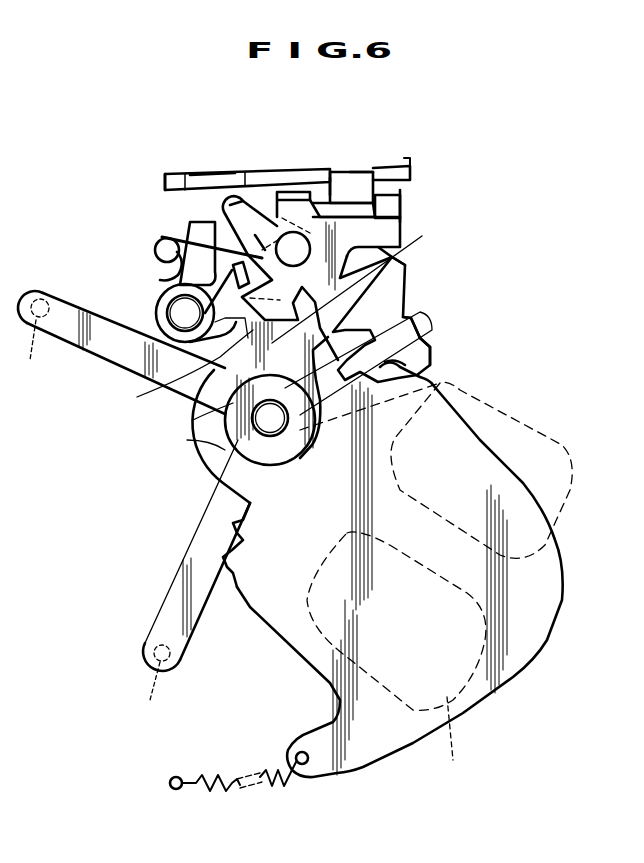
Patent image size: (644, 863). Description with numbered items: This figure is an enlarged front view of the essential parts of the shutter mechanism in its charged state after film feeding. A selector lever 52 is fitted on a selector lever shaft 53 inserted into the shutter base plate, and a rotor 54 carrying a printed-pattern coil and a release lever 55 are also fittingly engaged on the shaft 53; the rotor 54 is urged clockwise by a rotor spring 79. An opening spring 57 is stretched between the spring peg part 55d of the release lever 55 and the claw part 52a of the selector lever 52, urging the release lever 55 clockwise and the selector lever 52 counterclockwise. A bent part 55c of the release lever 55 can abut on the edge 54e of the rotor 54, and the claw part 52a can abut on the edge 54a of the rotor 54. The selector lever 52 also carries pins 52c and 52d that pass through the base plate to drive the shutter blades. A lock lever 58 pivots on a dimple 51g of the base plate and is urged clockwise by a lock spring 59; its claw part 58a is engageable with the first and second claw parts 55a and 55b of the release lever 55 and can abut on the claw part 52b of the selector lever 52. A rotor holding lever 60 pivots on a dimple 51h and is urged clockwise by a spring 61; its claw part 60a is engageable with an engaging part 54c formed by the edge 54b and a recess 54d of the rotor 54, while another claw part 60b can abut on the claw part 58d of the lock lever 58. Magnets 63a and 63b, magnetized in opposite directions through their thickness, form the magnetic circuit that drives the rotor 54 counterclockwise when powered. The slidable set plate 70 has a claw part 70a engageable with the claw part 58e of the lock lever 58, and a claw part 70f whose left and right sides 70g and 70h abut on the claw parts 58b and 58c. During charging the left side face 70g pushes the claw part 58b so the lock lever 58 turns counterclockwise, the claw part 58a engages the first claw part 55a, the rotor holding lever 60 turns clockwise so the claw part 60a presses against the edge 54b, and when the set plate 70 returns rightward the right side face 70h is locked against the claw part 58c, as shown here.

The dimple 51g is at (328, 183).
The dimple 51h is at (183, 313).
The selector lever 52 is at (124, 373).
The claw part 52a is at (230, 550).
The claw part 52b is at (422, 323).
The pin 52c is at (156, 685).
The pin 52d is at (30, 343).
The selector lever shaft 53 is at (265, 427).
The rotor 54 is at (546, 644).
The edge 54a is at (238, 580).
The edge 54b is at (178, 365).
The engaging part 54c is at (193, 420).
The recess 54d is at (187, 440).
The edge 54e is at (404, 366).
The release lever 55 is at (405, 263).
The first claw part 55a is at (412, 322).
The second claw part 55b is at (432, 345).
The bent part 55c is at (433, 360).
The spring peg part 55d is at (406, 262).
The opening spring 57 is at (223, 483).
The lock lever 58 is at (400, 220).
The claw part 58a is at (398, 297).
The claw part 58b is at (298, 243).
The claw part 58c is at (401, 198).
The claw part 58d is at (262, 248).
The claw part 58e is at (240, 204).
The lock spring 59 is at (227, 247).
The rotor holding lever 60 is at (160, 290).
The claw part 60a is at (418, 244).
The claw part 60b is at (225, 258).
The spring 61 is at (166, 258).
The magnet 63a is at (550, 448).
The magnet 63b is at (396, 662).
The set plate 70 is at (410, 160).
The claw part 70a is at (208, 176).
The claw part 70f is at (362, 180).
The left side face 70g is at (331, 188).
The right side face 70h is at (378, 192).
The rotor spring 79 is at (224, 790).